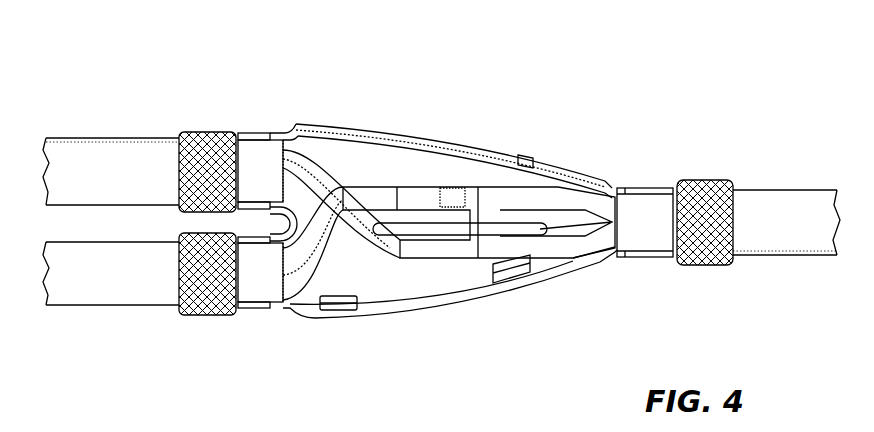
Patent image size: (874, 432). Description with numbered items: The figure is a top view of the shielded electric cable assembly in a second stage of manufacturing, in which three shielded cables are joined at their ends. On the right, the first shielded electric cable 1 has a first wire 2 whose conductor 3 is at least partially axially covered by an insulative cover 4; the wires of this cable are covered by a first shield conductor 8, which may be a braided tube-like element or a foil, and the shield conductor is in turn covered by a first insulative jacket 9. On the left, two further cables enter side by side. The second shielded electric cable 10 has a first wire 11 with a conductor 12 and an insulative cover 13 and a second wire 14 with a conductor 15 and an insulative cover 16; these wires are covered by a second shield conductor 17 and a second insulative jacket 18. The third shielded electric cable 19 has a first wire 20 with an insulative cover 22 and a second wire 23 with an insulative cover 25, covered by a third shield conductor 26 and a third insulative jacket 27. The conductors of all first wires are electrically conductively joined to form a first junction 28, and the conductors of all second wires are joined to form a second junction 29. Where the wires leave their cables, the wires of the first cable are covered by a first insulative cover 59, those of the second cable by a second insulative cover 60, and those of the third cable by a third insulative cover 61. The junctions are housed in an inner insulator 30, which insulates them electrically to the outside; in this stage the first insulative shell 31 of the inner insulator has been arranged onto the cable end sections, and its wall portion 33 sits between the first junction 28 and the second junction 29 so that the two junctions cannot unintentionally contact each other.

The first shielded electric cable 1 is at (788, 215).
The first wire 2 is at (567, 193).
The conductor 3 is at (473, 197).
The insulative cover 4 is at (528, 156).
The first shield conductor 8 is at (700, 197).
The first insulative jacket 9 is at (753, 189).
The second shielded electric cable 10 is at (120, 163).
The first wire 11 is at (303, 152).
The conductor 12 is at (455, 183).
The insulative cover 13 is at (330, 150).
The second wire 14 is at (318, 200).
The conductor 15 is at (405, 195).
The insulative cover 16 is at (347, 215).
The second shield conductor 17 is at (217, 148).
The second insulative jacket 18 is at (160, 138).
The third shielded electric cable 19 is at (122, 281).
The first wire 20 is at (297, 259).
The insulative cover 22 is at (313, 258).
The second wire 23 is at (338, 263).
The insulative cover 25 is at (385, 287).
The third shield conductor 26 is at (205, 300).
The third insulative jacket 27 is at (155, 306).
The first junction 28 is at (430, 165).
The second junction 29 is at (452, 236).
The inner insulator 30 is at (572, 266).
The first insulative shell 31 is at (602, 268).
The wall portion 33 is at (483, 256).
The first insulative cover 59 is at (632, 205).
The second insulative cover 60 is at (263, 153).
The third insulative cover 61 is at (258, 284).